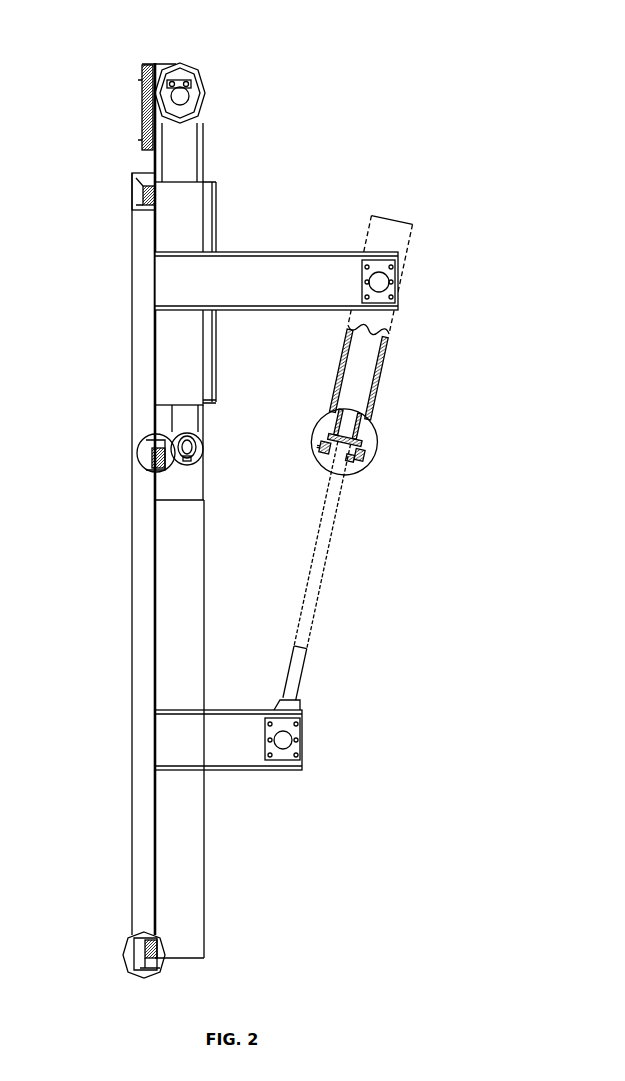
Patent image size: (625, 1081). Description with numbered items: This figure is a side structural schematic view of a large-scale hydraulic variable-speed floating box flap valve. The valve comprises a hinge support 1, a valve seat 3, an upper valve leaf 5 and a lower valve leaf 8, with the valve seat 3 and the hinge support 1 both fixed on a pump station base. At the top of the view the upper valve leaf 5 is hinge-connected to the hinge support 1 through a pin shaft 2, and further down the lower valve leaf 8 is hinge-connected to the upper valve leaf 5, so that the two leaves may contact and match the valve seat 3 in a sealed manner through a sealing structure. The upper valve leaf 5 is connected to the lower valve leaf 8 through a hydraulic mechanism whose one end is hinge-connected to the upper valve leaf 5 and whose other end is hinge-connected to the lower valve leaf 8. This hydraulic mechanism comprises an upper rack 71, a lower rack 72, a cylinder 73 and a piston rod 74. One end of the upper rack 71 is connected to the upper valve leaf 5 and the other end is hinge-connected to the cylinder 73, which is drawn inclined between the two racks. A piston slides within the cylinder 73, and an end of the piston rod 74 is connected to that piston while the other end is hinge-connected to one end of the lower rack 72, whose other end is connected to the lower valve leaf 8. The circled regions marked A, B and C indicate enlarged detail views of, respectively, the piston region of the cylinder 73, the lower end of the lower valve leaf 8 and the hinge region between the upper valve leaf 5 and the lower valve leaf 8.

The hinge support 1 is at (146, 112).
The pin shaft 2 is at (182, 92).
The valve seat 3 is at (148, 413).
The upper valve leaf 5 is at (178, 338).
The lower valve leaf 8 is at (188, 597).
The upper rack 71 is at (262, 280).
The lower rack 72 is at (225, 750).
The cylinder 73 is at (390, 232).
The piston rod 74 is at (320, 570).
The detail A (piston) A is at (350, 473).
The detail B (lower roller) B is at (148, 935).
The detail C (guide roller) C is at (148, 472).